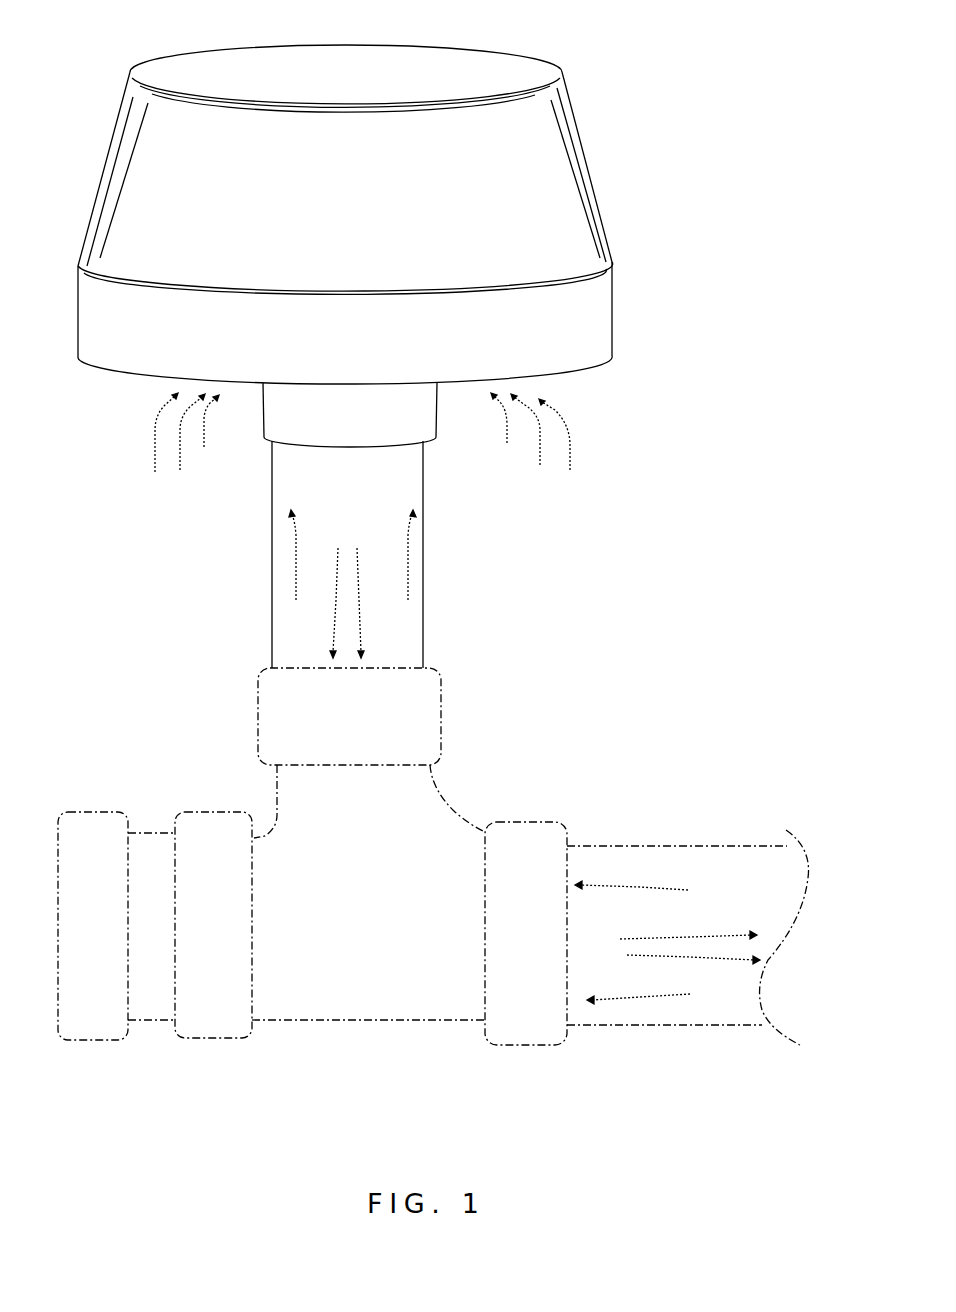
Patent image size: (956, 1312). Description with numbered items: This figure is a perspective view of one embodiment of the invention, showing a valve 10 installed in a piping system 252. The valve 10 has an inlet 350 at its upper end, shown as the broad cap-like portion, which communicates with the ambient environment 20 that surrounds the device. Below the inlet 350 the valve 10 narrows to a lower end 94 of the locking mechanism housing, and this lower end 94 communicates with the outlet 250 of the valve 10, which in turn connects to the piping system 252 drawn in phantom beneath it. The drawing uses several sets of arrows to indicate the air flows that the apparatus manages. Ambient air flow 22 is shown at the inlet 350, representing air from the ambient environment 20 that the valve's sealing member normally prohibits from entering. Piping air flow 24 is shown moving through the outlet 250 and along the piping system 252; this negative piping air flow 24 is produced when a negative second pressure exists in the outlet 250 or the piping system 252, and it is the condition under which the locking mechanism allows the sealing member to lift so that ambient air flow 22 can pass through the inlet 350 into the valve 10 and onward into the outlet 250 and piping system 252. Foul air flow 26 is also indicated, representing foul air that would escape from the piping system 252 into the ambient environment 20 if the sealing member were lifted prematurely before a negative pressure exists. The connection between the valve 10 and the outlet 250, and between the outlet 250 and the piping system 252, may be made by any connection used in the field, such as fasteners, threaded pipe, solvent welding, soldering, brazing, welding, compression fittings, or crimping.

The valve 10 is at (533, 54).
The inlet 350 is at (562, 378).
The ambient air flow 22 is at (153, 441).
The lower end 94 is at (437, 440).
The ambient environment 20 is at (592, 521).
The foul air flow 26 is at (291, 534).
The piping air flow 24 is at (335, 612).
The outlet 250 is at (433, 668).
The piping system 252 is at (505, 834).